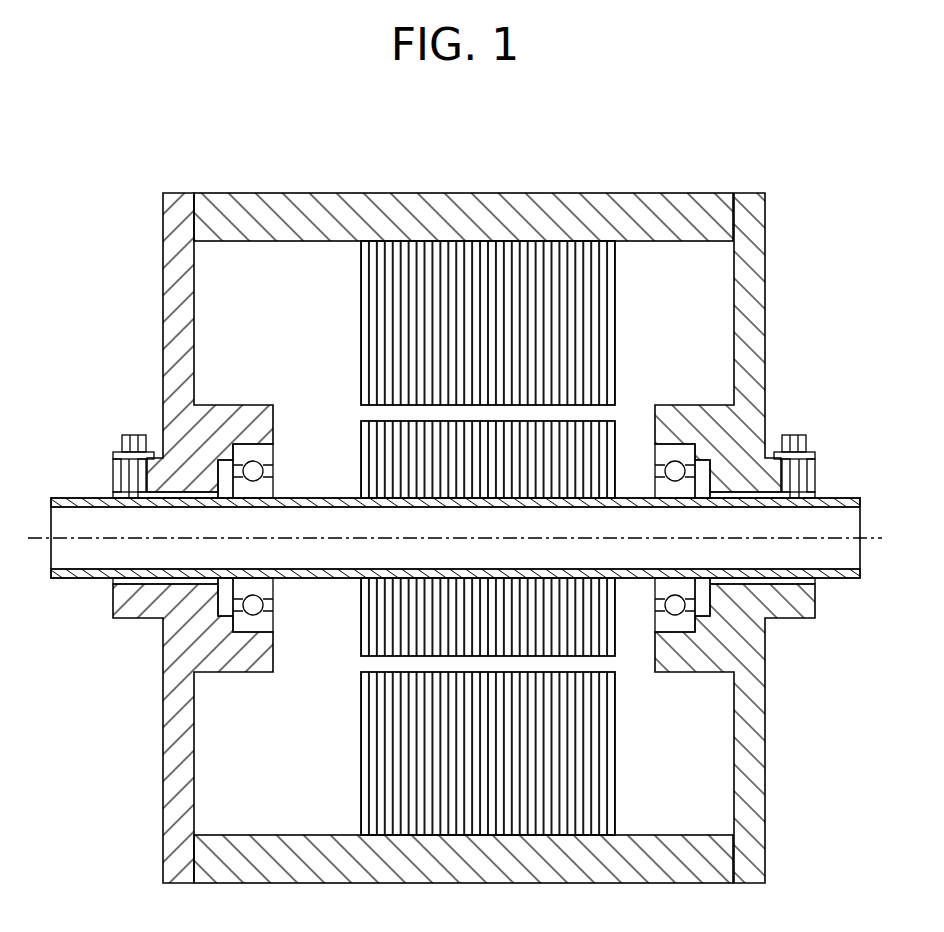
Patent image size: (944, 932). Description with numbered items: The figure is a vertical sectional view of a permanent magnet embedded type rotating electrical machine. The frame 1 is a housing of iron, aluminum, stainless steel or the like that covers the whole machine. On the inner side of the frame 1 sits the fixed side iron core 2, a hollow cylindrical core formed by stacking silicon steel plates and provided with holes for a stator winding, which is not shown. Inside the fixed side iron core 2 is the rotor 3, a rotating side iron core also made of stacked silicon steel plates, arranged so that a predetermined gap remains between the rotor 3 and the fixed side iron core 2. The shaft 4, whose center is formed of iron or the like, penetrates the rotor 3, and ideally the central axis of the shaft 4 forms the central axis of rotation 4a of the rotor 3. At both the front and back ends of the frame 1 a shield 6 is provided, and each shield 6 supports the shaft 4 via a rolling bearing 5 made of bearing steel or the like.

The frame 1 is at (641, 193).
The fixed side iron core 2 is at (617, 290).
The rotor 3 is at (617, 433).
The shaft 4 is at (333, 498).
The central axis of rotation 4a is at (93, 538).
The rolling bearing 5 is at (273, 448).
The shield 6 is at (163, 308).